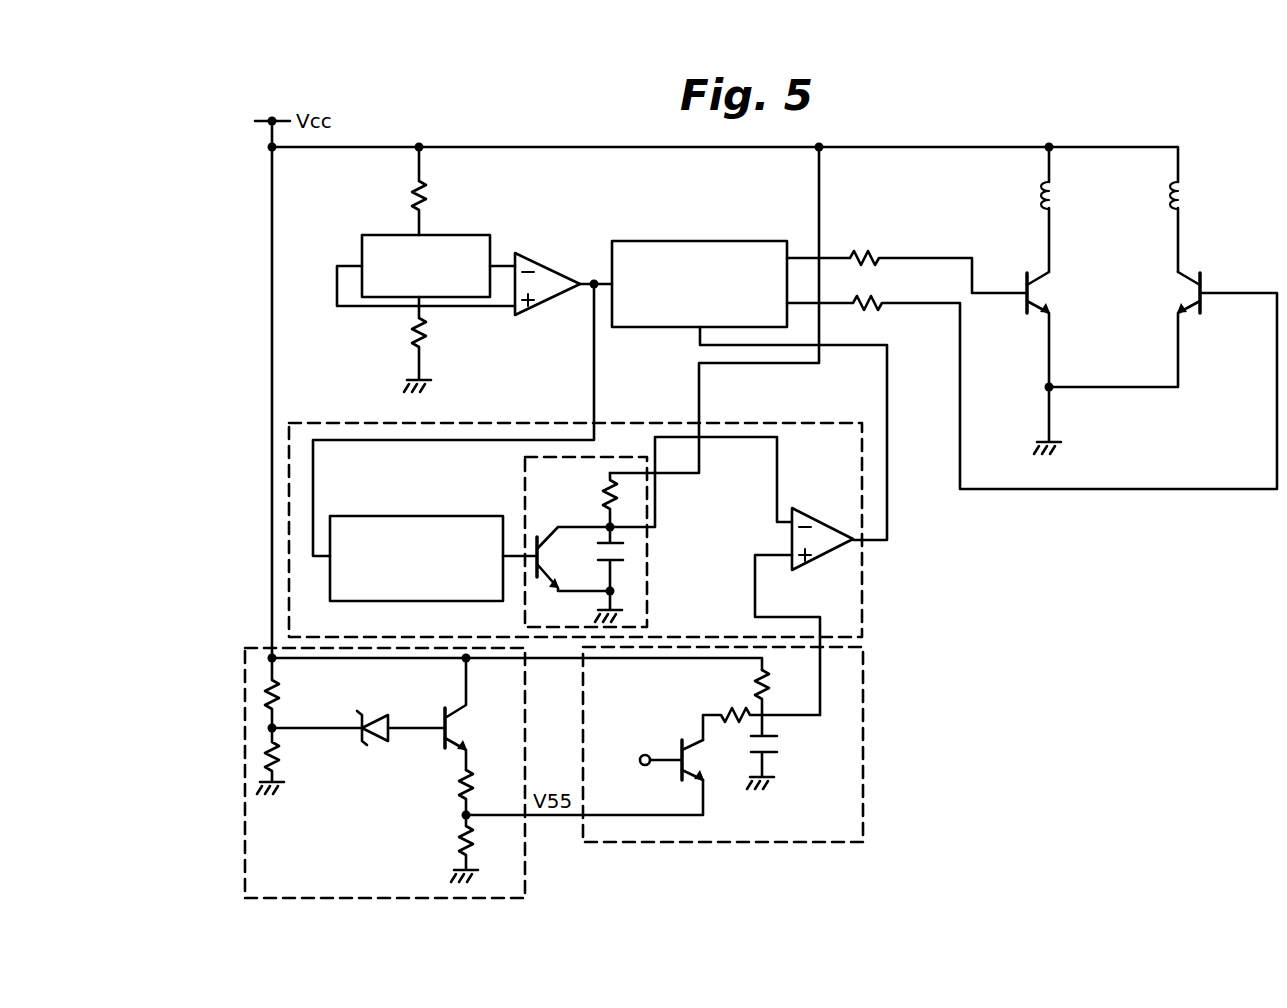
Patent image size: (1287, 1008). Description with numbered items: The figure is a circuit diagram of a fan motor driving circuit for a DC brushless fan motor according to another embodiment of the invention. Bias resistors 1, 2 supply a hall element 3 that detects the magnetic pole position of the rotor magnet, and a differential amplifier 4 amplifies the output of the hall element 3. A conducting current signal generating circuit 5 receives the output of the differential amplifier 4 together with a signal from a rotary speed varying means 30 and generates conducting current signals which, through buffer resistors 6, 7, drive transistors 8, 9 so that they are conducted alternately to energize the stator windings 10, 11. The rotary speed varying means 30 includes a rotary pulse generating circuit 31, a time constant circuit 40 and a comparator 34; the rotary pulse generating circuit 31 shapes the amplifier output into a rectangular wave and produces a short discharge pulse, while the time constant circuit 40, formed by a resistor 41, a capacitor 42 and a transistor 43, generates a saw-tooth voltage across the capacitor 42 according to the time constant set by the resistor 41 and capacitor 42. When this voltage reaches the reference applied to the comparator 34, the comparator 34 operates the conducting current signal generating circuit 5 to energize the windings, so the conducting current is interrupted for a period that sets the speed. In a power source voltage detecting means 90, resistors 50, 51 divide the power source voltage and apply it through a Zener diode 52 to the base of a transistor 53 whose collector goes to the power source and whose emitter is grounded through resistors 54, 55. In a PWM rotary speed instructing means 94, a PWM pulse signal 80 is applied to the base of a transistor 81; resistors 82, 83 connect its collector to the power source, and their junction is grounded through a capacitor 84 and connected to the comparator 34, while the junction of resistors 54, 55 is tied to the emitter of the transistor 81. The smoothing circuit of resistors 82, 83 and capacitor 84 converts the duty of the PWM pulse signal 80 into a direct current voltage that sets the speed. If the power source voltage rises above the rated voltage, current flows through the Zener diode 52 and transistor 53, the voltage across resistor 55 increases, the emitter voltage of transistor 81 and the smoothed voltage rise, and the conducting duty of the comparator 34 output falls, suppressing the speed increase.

The bias resistor 1 is at (410, 182).
The bias resistor 2 is at (410, 340).
The hall element 3 is at (451, 235).
The differential amplifier 4 is at (526, 256).
The conducting current signal generating circuit 5 is at (630, 241).
The buffer resistor 6 is at (858, 258).
The buffer resistor 7 is at (863, 303).
The transistor 8 is at (1050, 308).
The transistor 9 is at (1178, 308).
The stator winding 10 is at (1060, 192).
The stator winding 11 is at (1190, 197).
The rotary speed varying means 30 is at (366, 423).
The rotary pulse generating circuit 31 is at (385, 516).
The comparator 34 is at (809, 508).
The time constant circuit 40 is at (525, 472).
The resistor 41 is at (604, 497).
The capacitor 42 is at (622, 552).
The transistor 43 is at (578, 512).
The resistor 50 is at (265, 692).
The resistor 51 is at (265, 750).
The Zener diode 52 is at (383, 715).
The transistor 53 is at (468, 706).
The resistor 54 is at (460, 783).
The resistor 55 is at (460, 838).
The PWM pulse signal 80 is at (644, 754).
The transistor 81 is at (676, 773).
The resistor 82 is at (728, 712).
The resistor 83 is at (757, 686).
The capacitor 84 is at (775, 748).
The power source voltage detecting means 90 is at (245, 860).
The PWM rotary speed instructing means 94 is at (865, 808).